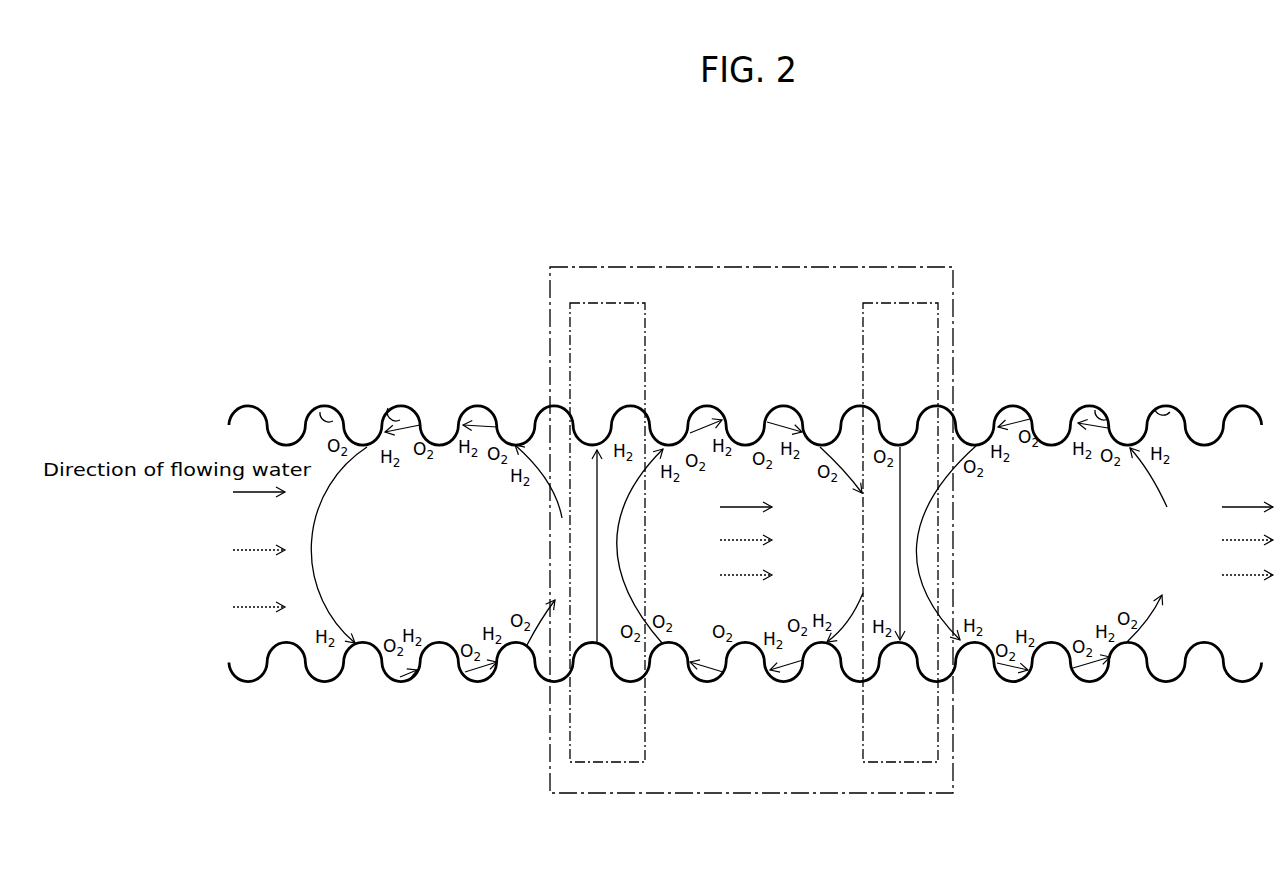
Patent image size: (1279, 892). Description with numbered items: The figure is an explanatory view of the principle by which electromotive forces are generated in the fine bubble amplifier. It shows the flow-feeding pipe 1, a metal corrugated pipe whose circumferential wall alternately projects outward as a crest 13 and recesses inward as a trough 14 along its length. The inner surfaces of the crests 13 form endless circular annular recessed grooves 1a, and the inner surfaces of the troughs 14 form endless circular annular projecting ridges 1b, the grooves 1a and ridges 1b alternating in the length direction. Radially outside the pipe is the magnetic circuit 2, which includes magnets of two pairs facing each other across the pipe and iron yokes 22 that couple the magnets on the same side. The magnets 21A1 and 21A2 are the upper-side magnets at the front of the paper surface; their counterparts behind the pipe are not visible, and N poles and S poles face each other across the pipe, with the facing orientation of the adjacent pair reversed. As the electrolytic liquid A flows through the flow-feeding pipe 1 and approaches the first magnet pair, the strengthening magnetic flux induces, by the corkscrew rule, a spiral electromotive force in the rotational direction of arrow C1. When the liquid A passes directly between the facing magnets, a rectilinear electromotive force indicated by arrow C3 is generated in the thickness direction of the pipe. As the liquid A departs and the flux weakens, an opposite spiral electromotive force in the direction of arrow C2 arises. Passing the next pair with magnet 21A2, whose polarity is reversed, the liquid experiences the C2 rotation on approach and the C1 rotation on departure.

The flow-feeding pipe 1 is at (246, 400).
The recessed groove 1a is at (330, 420).
The projecting ridge 1b is at (443, 448).
The crest 13 is at (398, 406).
The trough 14 is at (438, 444).
The magnetic circuit 2 is at (796, 266).
The magnet 21A1 is at (605, 302).
The magnet 21A2 is at (903, 302).
The yoke 22 is at (758, 750).
The arrow indicating spiral electromotive force direction C1 is at (312, 550).
The arrow indicating spiral electromotive force direction C2 is at (617, 540).
The arrow indicating rectilinear electromotive force direction C3 is at (597, 538).
The electrolytic liquid A is at (241, 549).